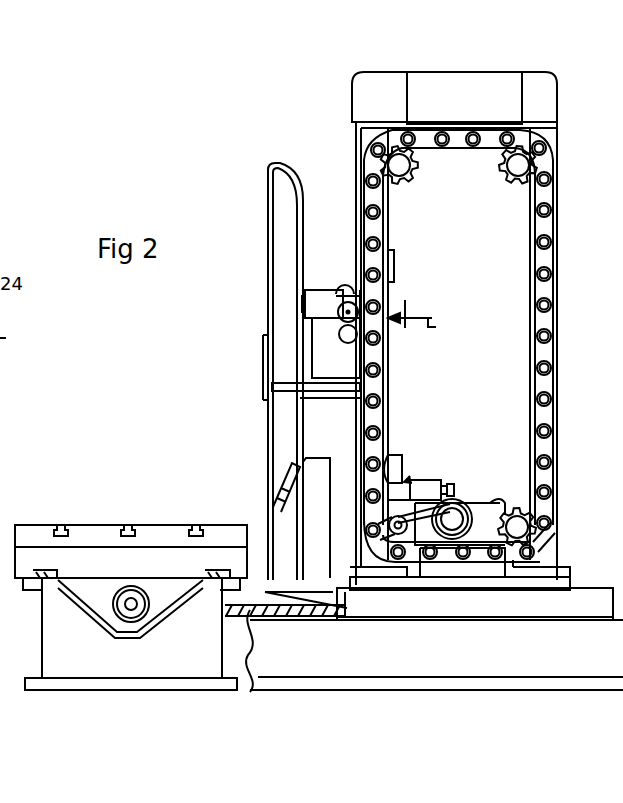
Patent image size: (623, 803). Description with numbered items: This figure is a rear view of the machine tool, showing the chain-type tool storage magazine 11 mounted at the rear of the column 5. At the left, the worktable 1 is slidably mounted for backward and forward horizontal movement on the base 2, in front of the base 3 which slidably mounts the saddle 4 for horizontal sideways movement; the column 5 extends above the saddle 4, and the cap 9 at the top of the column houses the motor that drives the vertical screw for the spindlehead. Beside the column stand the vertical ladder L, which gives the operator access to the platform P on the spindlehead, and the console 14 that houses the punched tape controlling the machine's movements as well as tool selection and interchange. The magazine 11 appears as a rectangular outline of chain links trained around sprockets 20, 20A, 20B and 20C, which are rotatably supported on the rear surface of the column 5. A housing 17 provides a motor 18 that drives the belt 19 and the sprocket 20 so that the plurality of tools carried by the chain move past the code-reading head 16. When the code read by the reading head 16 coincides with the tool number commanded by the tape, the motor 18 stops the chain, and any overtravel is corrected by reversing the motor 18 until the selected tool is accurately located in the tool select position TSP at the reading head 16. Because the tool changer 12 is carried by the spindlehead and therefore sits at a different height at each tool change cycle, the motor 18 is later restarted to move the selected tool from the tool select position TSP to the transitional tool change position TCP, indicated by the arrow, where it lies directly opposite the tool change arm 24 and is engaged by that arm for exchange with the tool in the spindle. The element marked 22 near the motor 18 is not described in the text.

The worktable 1 is at (92, 535).
The base 2 is at (50, 613).
The base 3 is at (258, 634).
The saddle 4 is at (586, 590).
The column 5 is at (357, 127).
The cap 9 is at (440, 87).
The magazine 11 is at (356, 207).
The tool changer 12 is at (347, 246).
The console 14 is at (318, 470).
The reading head 16 is at (398, 456).
The housing 17 is at (505, 509).
The motor 18 is at (455, 518).
The belt 19 is at (437, 545).
The sprocket 20 is at (376, 537).
The sprocket 20A is at (398, 183).
The sprocket 20B is at (512, 181).
The sprocket 20C is at (482, 537).
The drive motor 22 is at (428, 489).
The tool change arm 24 is at (333, 292).
The ladder L is at (268, 300).
The platform P is at (345, 392).
The tool change position TCP is at (426, 320).
The tool select position TSP is at (408, 480).